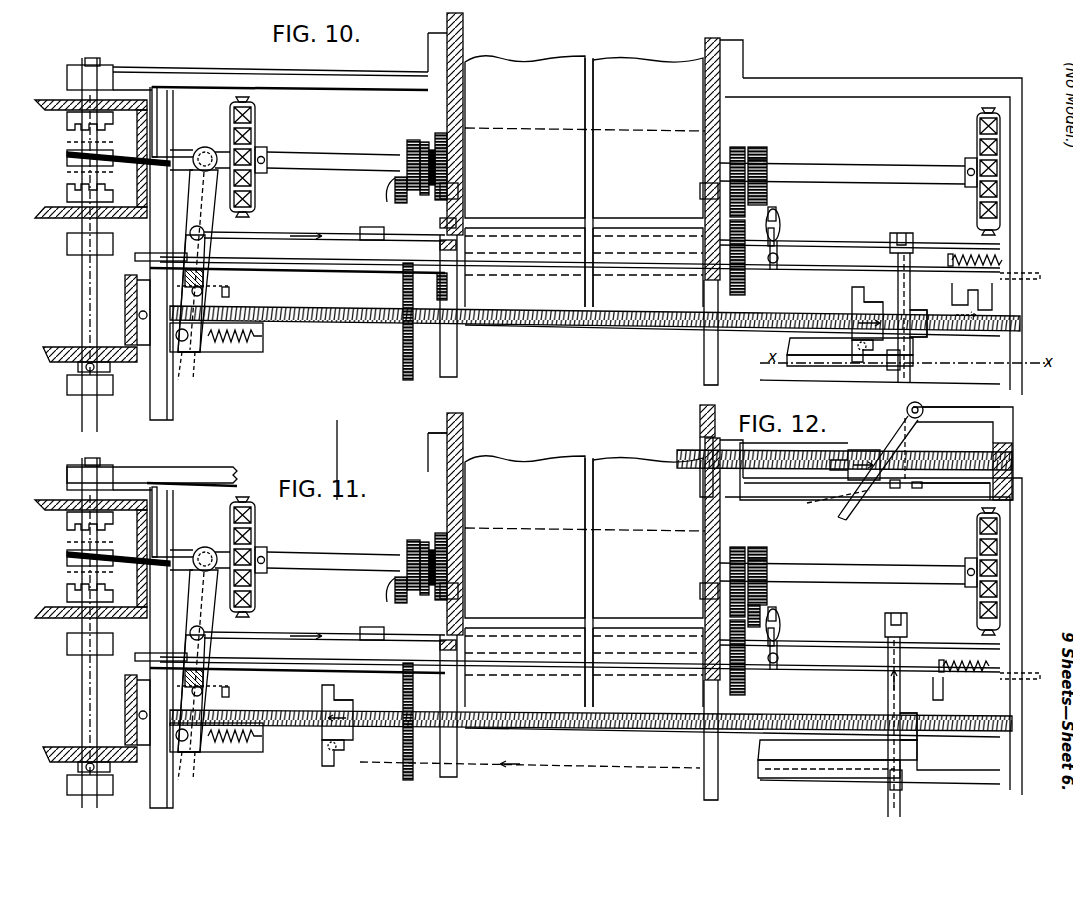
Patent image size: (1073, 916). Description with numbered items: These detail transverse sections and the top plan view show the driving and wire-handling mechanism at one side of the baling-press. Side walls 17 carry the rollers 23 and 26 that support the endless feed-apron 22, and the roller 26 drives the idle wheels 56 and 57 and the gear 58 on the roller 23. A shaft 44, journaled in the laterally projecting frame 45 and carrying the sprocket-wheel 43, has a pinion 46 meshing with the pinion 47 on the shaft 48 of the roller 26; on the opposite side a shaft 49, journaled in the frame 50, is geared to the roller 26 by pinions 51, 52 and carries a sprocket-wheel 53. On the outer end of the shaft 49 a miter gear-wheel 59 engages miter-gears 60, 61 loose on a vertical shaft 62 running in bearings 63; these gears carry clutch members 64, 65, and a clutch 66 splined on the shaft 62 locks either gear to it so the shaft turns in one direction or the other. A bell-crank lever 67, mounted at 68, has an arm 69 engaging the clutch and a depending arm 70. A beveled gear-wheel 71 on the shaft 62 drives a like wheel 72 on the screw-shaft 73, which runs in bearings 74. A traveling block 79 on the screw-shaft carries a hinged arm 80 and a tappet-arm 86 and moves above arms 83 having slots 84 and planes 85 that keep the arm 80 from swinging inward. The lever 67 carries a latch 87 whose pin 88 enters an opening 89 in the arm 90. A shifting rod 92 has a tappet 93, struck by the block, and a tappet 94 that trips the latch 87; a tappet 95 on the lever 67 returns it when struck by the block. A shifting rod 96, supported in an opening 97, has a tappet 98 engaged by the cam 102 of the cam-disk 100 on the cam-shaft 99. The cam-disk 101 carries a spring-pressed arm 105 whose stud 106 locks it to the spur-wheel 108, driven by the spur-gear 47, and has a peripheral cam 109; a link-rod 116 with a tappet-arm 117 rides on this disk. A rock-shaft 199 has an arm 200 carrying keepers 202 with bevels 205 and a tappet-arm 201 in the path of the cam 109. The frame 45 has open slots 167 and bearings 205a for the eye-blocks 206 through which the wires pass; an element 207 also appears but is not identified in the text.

In FIG. 10, the side walls 17 is at (464, 100).
In FIG. 12, the side walls 17 is at (700, 419).
In FIG. 11, the side walls 17 is at (464, 515).
In FIG. 10, the endless feed-apron 22 is at (628, 232).
In FIG. 11, the endless feed-apron 22 is at (632, 632).
In FIG. 10, the roller 23 is at (540, 232).
In FIG. 11, the roller 23 is at (541, 632).
In FIG. 10, the roller 26 is at (541, 128).
In FIG. 11, the roller 26 is at (551, 528).
In FIG. 10, the sprocket-wheel 43 is at (977, 140).
In FIG. 11, the sprocket-wheel 43 is at (977, 545).
In FIG. 10, the shaft 44 is at (853, 164).
In FIG. 11, the shaft 44 is at (860, 563).
In FIG. 10, the frame 45 is at (836, 78).
In FIG. 12, the frame 45 is at (993, 448).
In FIG. 11, the frame 45 is at (1005, 620).
In FIG. 10, the pinion 46 is at (738, 147).
In FIG. 11, the pinion 46 is at (737, 547).
In FIG. 10, the pinion 47 is at (768, 200).
In FIG. 11, the pinion 47 is at (700, 606).
In FIG. 10, the shaft 48 is at (458, 190).
In FIG. 11, the shaft 48 is at (458, 590).
In FIG. 10, the shaft 49 is at (326, 158).
In FIG. 11, the shaft 49 is at (326, 560).
In FIG. 10, the frame 50 is at (168, 98).
In FIG. 11, the frame 50 is at (168, 520).
In FIG. 10, the pinion 51 is at (424, 142).
In FIG. 11, the pinion 51 is at (424, 542).
In FIG. 10, the pinion 52 is at (397, 203).
In FIG. 11, the pinion 52 is at (397, 603).
In FIG. 10, the sprocket-wheel 53 is at (256, 135).
In FIG. 11, the sprocket-wheel 53 is at (256, 537).
In FIG. 10, the idle wheel 56 is at (441, 133).
In FIG. 10, the idle wheel 57 is at (460, 222).
In FIG. 10, the gear 58 is at (450, 300).
In FIG. 10, the miter gear-wheel 59 is at (158, 121).
In FIG. 11, the miter gear-wheel 59 is at (158, 522).
In FIG. 10, the miter-gear 60 is at (36, 216).
In FIG. 11, the miter-gear 60 is at (36, 613).
In FIG. 10, the miter-gear 61 is at (38, 103).
In FIG. 11, the miter-gear 61 is at (40, 502).
In FIG. 10, the vertical shaft 62 is at (82, 290).
In FIG. 11, the vertical shaft 62 is at (82, 700).
In FIG. 10, the bearings 63 is at (67, 78).
In FIG. 11, the bearings 63 is at (67, 470).
In FIG. 10, the clutch member 64 is at (67, 195).
In FIG. 11, the clutch member 64 is at (67, 595).
In FIG. 10, the clutch member 65 is at (67, 124).
In FIG. 11, the clutch member 65 is at (67, 522).
In FIG. 10, the clutch 66 is at (67, 163).
In FIG. 11, the clutch 66 is at (67, 557).
In FIG. 10, the bell-crank lever 67 is at (208, 208).
In FIG. 11, the bell-crank lever 67 is at (200, 604).
In FIG. 10, the mounting of bell-crank lever 68 is at (207, 147).
In FIG. 11, the mounting of bell-crank lever 68 is at (193, 559).
In FIG. 10, the arm 69 is at (67, 153).
In FIG. 11, the arm 69 is at (118, 559).
In FIG. 10, the depending arm 70 is at (212, 260).
In FIG. 11, the depending arm 70 is at (212, 672).
In FIG. 10, the beveled gear-wheel 71 is at (65, 347).
In FIG. 11, the beveled gear-wheel 71 is at (65, 747).
In FIG. 10, the beveled gear-wheel 72 is at (130, 322).
In FIG. 11, the beveled gear-wheel 72 is at (127, 697).
In FIG. 10, the screw-shaft 73 is at (334, 324).
In FIG. 12, the screw-shaft 73 is at (677, 460).
In FIG. 11, the screw-shaft 73 is at (302, 728).
In FIG. 10, the bearings 74 is at (127, 298).
In FIG. 11, the bearings 74 is at (152, 700).
In FIG. 10, the traveling block 79 is at (852, 310).
In FIG. 12, the traveling block 79 is at (864, 450).
In FIG. 11, the traveling block 79 is at (352, 706).
In FIG. 10, the arm 80 is at (855, 362).
In FIG. 11, the arm 80 is at (332, 766).
In FIG. 10, the arms 83 is at (913, 360).
In FIG. 12, the arms 83 is at (935, 500).
In FIG. 11, the arms 83 is at (958, 755).
In FIG. 10, the longitudinal slot 84 is at (815, 355).
In FIG. 12, the longitudinal slot 84 is at (840, 516).
In FIG. 11, the longitudinal slot 84 is at (820, 760).
In FIG. 12, the plane 85 is at (807, 506).
In FIG. 11, the plane 85 is at (790, 778).
In FIG. 10, the tappet-arm 86 is at (852, 292).
In FIG. 12, the tappet-arm 86 is at (848, 476).
In FIG. 11, the tappet-arm 86 is at (322, 690).
In FIG. 10, the latch 87 is at (205, 276).
In FIG. 11, the latch 87 is at (205, 672).
In FIG. 10, the pin 88 is at (181, 367).
In FIG. 11, the pin 88 is at (204, 766).
In FIG. 10, the opening 89 is at (204, 366).
In FIG. 11, the opening 89 is at (183, 766).
In FIG. 10, the arm 90 is at (264, 345).
In FIG. 11, the arm 90 is at (263, 750).
In FIG. 10, the shifting rod 92 is at (358, 261).
In FIG. 11, the shifting rod 92 is at (350, 662).
In FIG. 10, the tappet 93 is at (952, 293).
In FIG. 11, the tappet 93 is at (943, 690).
In FIG. 10, the tappet 94 is at (170, 253).
In FIG. 11, the tappet 94 is at (170, 653).
In FIG. 10, the tappet 95 is at (230, 292).
In FIG. 11, the tappet 95 is at (230, 692).
In FIG. 10, the shifting rod 96 is at (314, 232).
In FIG. 11, the shifting rod 96 is at (290, 634).
In FIG. 10, the opening 97 is at (458, 242).
In FIG. 11, the opening 97 is at (458, 642).
In FIG. 10, the tappet 98 is at (362, 228).
In FIG. 11, the tappet 98 is at (372, 627).
In FIG. 10, the cam-shaft 99 is at (403, 284).
In FIG. 11, the cam-shaft 99 is at (403, 684).
In FIG. 10, the cam-disk 100 is at (407, 272).
In FIG. 11, the cam-disk 100 is at (400, 672).
In FIG. 10, the cam-disk 101 is at (767, 158).
In FIG. 11, the cam-disk 101 is at (767, 560).
In FIG. 10, the cam 102 is at (407, 165).
In FIG. 11, the cam 102 is at (407, 575).
In FIG. 10, the spring-pressed arm 105 is at (776, 236).
In FIG. 11, the spring-pressed arm 105 is at (776, 632).
In FIG. 10, the pin or stud 106 is at (778, 214).
In FIG. 11, the pin or stud 106 is at (778, 614).
In FIG. 10, the spur-wheel 108 is at (746, 292).
In FIG. 11, the spur-wheel 108 is at (746, 693).
In FIG. 11, the peripheral cam 109 is at (762, 606).
In FIG. 10, the link-rod 116 is at (716, 383).
In FIG. 11, the link-rod 116 is at (716, 793).
In FIG. 10, the tappet-arm 117 is at (760, 147).
In FIG. 11, the tappet-arm 117 is at (755, 547).
In FIG. 10, the open slot 167 is at (457, 370).
In FIG. 11, the open slot 167 is at (457, 775).
In FIG. 10, the rock-shaft 199 is at (862, 241).
In FIG. 11, the rock-shaft 199 is at (840, 641).
In FIG. 10, the arm 200 is at (903, 233).
In FIG. 11, the arm 200 is at (902, 625).
In FIG. 10, the tappet-arm 201 is at (780, 230).
In FIG. 11, the tappet-arm 201 is at (782, 656).
In FIG. 10, the keeper 202 is at (897, 312).
In FIG. 12, the keeper 202 is at (907, 462).
In FIG. 11, the keeper 202 is at (900, 722).
In FIG. 10, the bevels 205 is at (890, 370).
In FIG. 11, the bevels 205 is at (893, 790).
In FIG. 12, the bearings 205a is at (965, 407).
In FIG. 12, the cylindrical eye-blocks 206 is at (907, 412).
In FIG. 10, the spring 207 is at (1000, 260).
In FIG. 11, the spring 207 is at (955, 660).